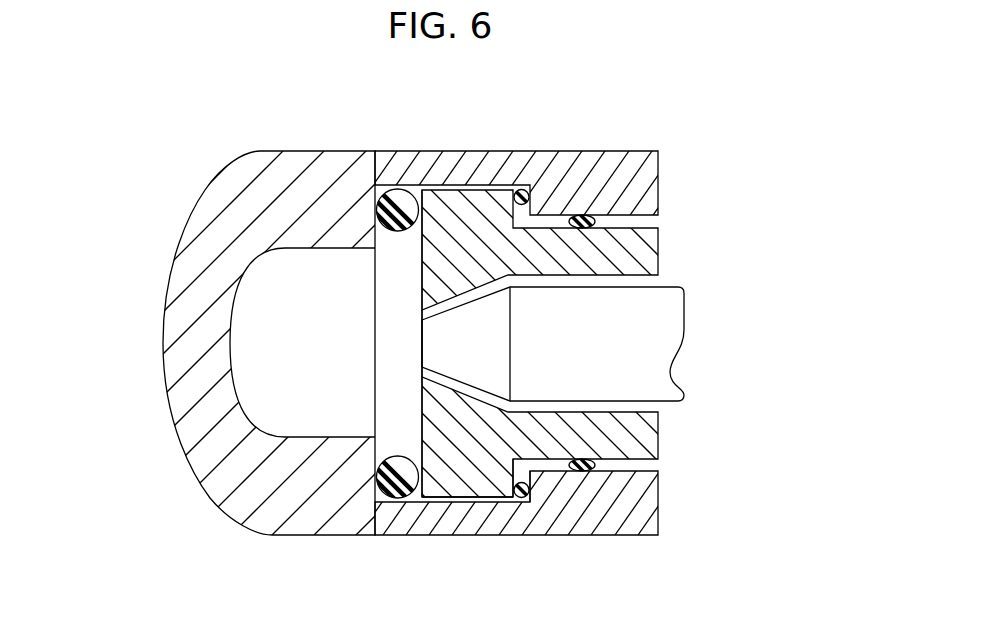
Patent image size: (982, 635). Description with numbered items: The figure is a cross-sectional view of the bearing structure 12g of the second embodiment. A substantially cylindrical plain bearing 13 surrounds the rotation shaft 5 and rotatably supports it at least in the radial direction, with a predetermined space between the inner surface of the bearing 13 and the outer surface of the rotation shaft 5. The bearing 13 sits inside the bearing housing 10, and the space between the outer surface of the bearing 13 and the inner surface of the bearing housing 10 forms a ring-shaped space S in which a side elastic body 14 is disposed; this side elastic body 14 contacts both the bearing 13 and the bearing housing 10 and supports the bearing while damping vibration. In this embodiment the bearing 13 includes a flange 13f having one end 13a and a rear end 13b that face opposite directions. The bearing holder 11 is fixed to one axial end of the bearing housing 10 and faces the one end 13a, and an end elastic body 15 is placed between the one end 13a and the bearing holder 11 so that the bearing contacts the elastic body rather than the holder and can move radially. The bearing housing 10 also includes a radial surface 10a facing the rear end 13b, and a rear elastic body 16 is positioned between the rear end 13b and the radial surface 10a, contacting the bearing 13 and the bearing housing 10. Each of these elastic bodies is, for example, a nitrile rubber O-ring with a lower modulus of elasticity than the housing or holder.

The rotation shaft 5 is at (600, 358).
The bearing housing 10 is at (407, 517).
The radial surface 10a is at (523, 497).
The bearing holder 11 is at (193, 342).
The bearing structure 12g is at (670, 257).
The bearing 13 is at (638, 442).
The one end 13a is at (420, 387).
The rear end 13b is at (519, 501).
The flange 13f is at (455, 468).
The side elastic body 14 is at (577, 214).
The end elastic body 15 is at (396, 190).
The rear elastic body 16 is at (522, 190).
The ring-shaped space S is at (630, 217).